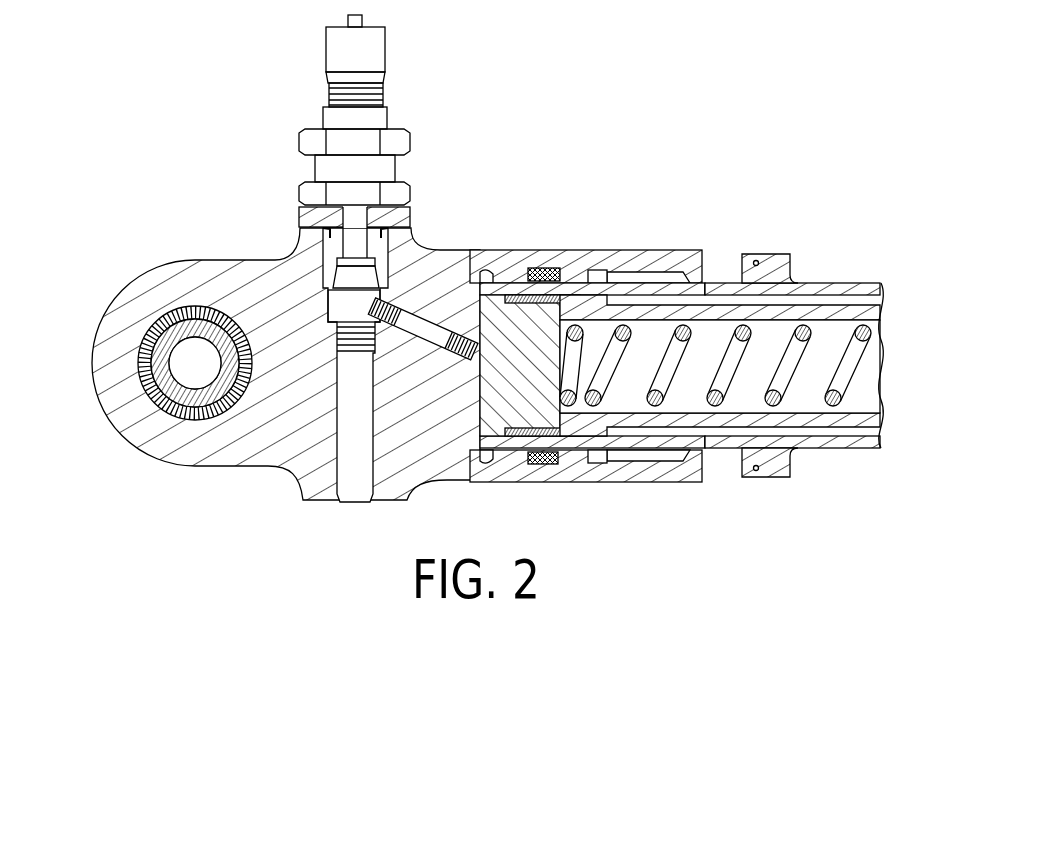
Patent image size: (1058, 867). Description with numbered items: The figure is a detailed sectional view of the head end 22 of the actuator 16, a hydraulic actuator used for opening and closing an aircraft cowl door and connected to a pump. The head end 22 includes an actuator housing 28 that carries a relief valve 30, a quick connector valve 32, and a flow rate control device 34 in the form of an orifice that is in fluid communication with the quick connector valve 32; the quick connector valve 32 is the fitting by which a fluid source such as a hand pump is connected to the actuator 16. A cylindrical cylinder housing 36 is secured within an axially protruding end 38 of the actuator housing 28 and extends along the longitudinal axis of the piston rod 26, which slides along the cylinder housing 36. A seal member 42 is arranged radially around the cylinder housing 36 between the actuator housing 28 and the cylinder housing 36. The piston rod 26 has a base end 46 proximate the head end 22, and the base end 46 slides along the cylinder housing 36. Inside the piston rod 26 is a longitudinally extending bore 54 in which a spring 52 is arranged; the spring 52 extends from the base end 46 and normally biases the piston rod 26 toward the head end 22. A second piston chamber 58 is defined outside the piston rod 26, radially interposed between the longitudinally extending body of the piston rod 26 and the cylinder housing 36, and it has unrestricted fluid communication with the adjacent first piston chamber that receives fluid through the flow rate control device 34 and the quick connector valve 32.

The actuator 16 is at (216, 149).
The head end 22 is at (96, 285).
The piston rod 26 is at (828, 306).
The actuator housing 28 is at (215, 457).
The relief valve 30 is at (357, 468).
The quick connector valve 32 is at (373, 53).
The flow rate control device 34 is at (387, 303).
The cylinder housing 36 is at (793, 283).
The axially protruding end 38 is at (615, 250).
The seal member 42 is at (543, 268).
The base end 46 is at (520, 418).
The spring 52 is at (787, 388).
The longitudinally extending bore 54 is at (867, 385).
The second piston chamber 58 is at (707, 300).